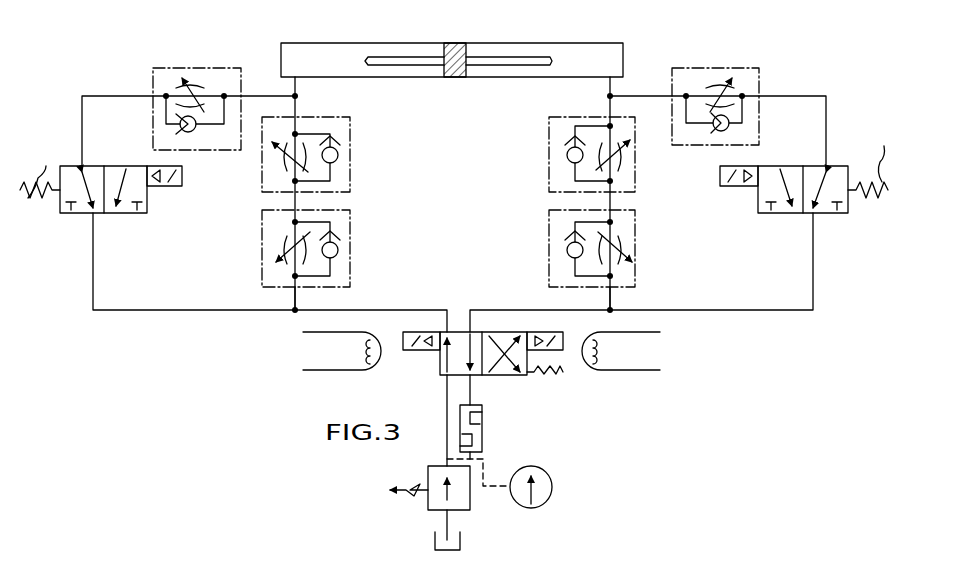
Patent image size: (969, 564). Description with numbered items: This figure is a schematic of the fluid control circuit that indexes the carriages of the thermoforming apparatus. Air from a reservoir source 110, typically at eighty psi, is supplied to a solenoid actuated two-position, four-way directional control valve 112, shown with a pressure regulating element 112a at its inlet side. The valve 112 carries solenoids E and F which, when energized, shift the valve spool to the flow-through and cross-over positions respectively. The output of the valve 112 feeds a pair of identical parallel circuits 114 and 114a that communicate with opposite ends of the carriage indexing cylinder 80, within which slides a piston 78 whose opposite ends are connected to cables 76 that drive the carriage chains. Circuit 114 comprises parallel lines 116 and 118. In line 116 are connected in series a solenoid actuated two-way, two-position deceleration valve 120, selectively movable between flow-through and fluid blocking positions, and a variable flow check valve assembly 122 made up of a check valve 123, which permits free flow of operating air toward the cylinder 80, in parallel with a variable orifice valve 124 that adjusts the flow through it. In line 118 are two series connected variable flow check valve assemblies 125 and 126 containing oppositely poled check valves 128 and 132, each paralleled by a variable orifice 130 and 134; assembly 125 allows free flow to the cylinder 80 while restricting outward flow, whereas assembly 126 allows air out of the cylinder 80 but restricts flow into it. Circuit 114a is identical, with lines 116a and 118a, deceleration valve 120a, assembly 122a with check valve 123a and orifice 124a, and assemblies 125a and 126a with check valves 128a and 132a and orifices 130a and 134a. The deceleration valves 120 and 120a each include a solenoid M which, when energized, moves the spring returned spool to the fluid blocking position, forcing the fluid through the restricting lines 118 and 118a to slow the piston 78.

The cable 76 is at (529, 62).
The piston 78 is at (457, 50).
The fluid operated cylinder 80 is at (393, 43).
The reservoir source 110 is at (460, 539).
The solenoid actuated 2-position, 4-way valve 112 is at (440, 376).
The pressure regulator 112a is at (427, 500).
The parallel circuit 114 is at (205, 322).
The parallel circuit 114a is at (705, 322).
The line 116 is at (145, 308).
The line 116a is at (775, 310).
The line 118 is at (293, 300).
The line 118a is at (612, 291).
The solenoid actuated 2-way, 2-position deceleration valve 120 is at (85, 216).
The deceleration valve 120a is at (790, 213).
The variable flow check valve assembly 122 is at (165, 71).
The variable flow check valve assembly 122a is at (757, 55).
The check valve 123 is at (212, 135).
The check valve 123a is at (735, 136).
The variable orifice valve 124 is at (210, 92).
The variable orifice valve 124a is at (744, 92).
The variable flow check valve assembly 125 is at (350, 230).
The variable flow check valve assembly 125a is at (637, 224).
The variable flow check valve assembly 126 is at (350, 174).
The variable flow check valve assembly 126a is at (553, 178).
The check valve 128 is at (339, 252).
The check valve 128a is at (566, 254).
The variable orifice valve 130 is at (276, 241).
The variable orifice valve 130a is at (632, 248).
The check valve 132 is at (338, 148).
The check valve 132a is at (566, 150).
The variable orifice valve 134 is at (278, 134).
The variable orifice valve 134a is at (623, 160).
The solenoid E is at (346, 332).
The solenoid F is at (607, 372).
The solenoid M is at (37, 169).